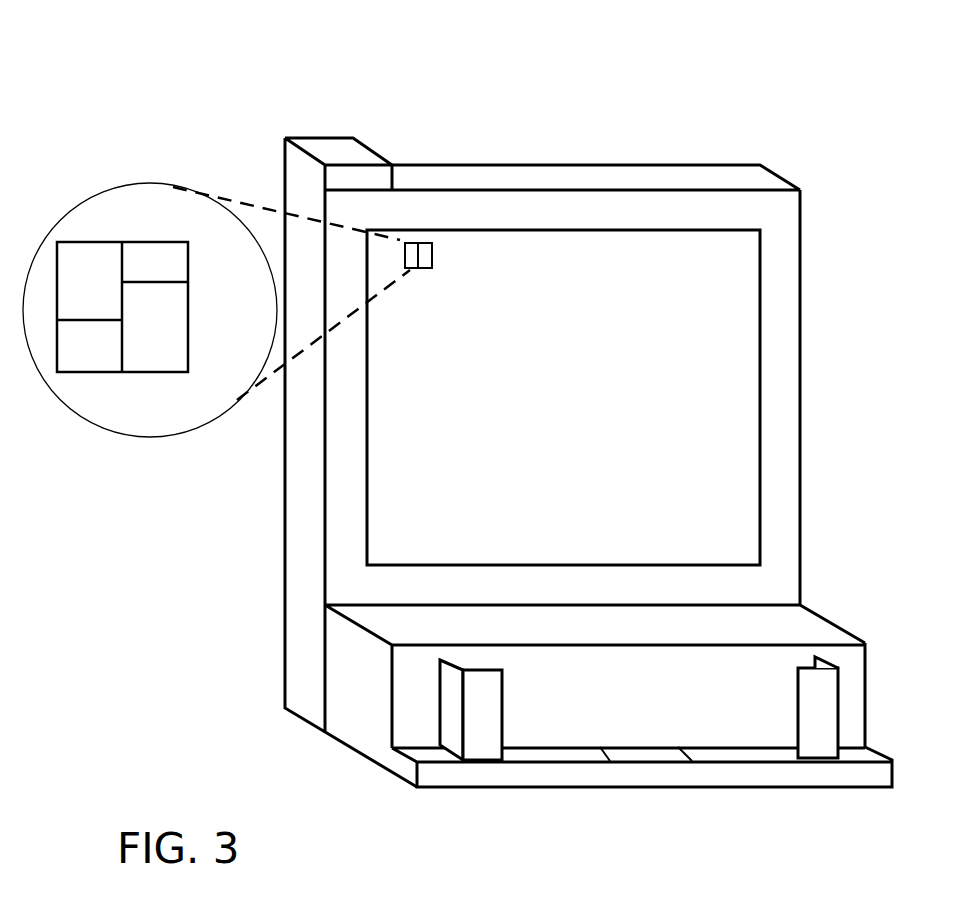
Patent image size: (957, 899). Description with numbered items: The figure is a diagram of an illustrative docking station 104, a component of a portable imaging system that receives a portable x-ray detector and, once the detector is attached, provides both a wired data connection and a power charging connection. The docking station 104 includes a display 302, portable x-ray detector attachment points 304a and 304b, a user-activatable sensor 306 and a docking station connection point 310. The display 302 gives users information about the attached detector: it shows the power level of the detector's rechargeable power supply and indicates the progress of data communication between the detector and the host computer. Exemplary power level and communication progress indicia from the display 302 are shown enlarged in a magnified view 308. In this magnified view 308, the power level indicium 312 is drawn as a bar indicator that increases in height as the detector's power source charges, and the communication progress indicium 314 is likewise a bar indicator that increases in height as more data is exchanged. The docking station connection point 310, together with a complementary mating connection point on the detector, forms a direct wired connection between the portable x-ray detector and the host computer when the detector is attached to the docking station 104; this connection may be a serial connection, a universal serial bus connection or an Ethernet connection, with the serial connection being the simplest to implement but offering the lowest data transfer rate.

The docking station 104 is at (457, 34).
The display 302 is at (653, 230).
The user-activatable sensor 306 is at (283, 148).
The magnified view 308 is at (130, 435).
The docking station connection point 310 is at (652, 762).
The portable x-ray detector attachment point 304a is at (500, 760).
The portable x-ray detector attachment point 304b is at (795, 752).
The power level indicium 312 is at (62, 372).
The communication progress indicium 314 is at (190, 358).